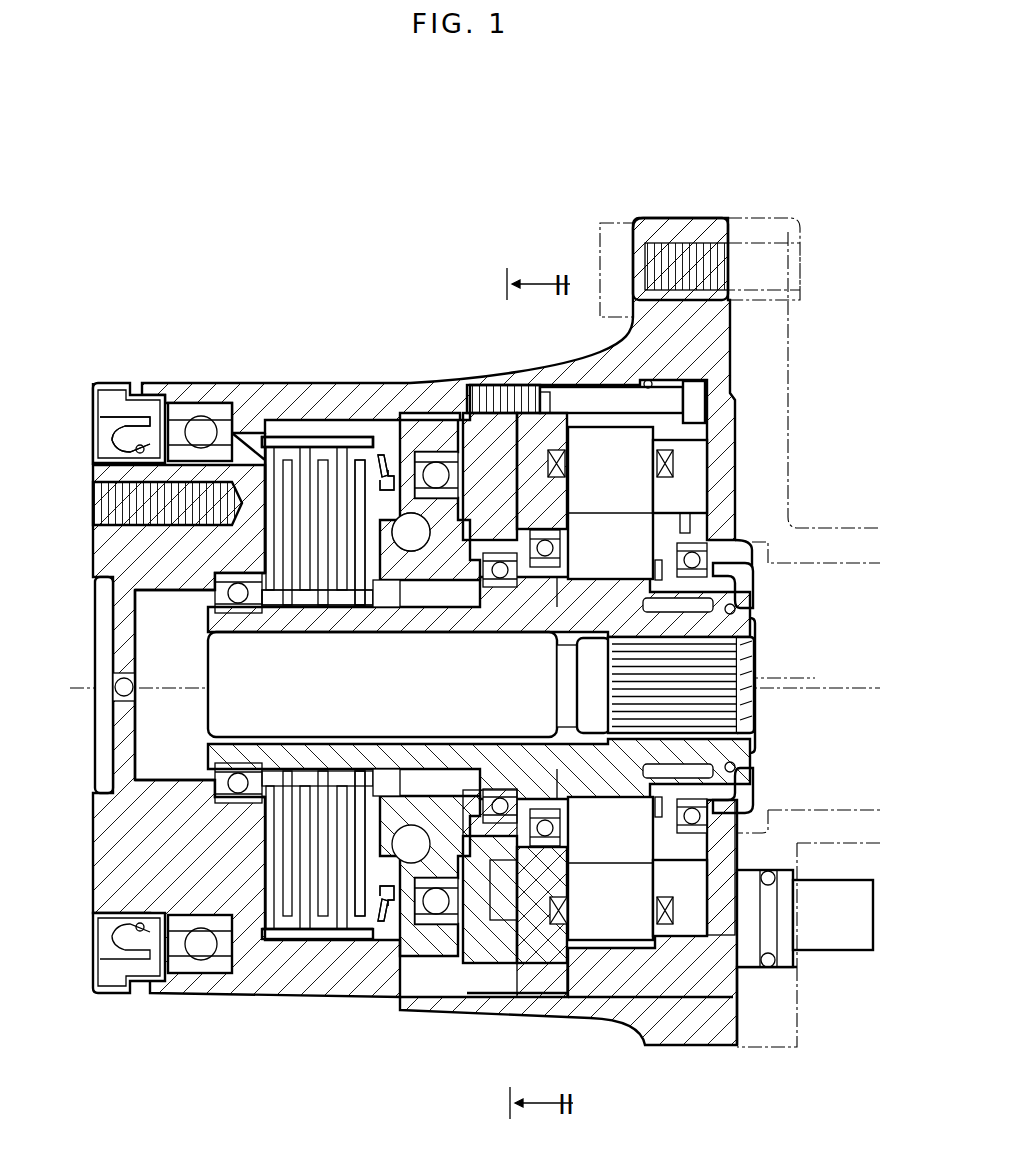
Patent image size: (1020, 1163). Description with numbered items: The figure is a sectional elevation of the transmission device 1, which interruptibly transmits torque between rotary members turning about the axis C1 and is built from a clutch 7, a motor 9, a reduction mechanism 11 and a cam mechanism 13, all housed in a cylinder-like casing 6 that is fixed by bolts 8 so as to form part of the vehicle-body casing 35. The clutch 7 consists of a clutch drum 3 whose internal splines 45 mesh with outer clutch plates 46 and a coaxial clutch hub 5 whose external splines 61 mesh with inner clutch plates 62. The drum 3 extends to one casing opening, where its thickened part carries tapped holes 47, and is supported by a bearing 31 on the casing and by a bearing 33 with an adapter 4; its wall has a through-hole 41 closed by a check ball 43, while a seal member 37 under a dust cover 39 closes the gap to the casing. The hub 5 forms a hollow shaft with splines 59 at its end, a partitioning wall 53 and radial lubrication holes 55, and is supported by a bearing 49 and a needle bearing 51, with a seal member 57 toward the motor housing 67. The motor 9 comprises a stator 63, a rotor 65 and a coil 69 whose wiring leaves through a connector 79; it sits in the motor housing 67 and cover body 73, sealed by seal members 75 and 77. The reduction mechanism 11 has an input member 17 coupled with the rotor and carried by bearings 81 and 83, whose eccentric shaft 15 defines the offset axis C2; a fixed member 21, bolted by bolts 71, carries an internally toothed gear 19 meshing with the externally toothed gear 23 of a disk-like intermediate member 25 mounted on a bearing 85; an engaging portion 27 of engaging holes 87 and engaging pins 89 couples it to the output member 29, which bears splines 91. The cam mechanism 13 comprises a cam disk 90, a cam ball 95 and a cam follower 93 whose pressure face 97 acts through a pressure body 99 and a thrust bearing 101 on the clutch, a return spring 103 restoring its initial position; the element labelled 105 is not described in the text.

The transmission device 1 is at (458, 182).
The clutch drum 3 is at (270, 412).
The adapter 4 is at (395, 428).
The clutch hub 5 is at (762, 652).
The casing 6 is at (220, 382).
The clutch 7 is at (334, 432).
The bolts 8 is at (612, 222).
The motor 9 is at (601, 962).
The reduction mechanism 11 is at (500, 372).
The cam mechanism 13 is at (384, 452).
The eccentric shaft 15 is at (520, 530).
The input member 17 is at (600, 582).
The internally toothed gear 19 is at (492, 1000).
The fixed member 21 is at (476, 998).
The externally toothed gear 23 is at (462, 995).
The intermediate member 25 is at (522, 1000).
The engaging portion 27 is at (505, 925).
The output member 29 is at (433, 788).
The bearing 31 is at (200, 950).
The bearing 33 is at (440, 462).
The casing 35 is at (690, 212).
The seal member 37 is at (140, 417).
The dust cover 39 is at (105, 383).
The through-hole 41 is at (116, 690).
The check ball 43 is at (104, 680).
The splines 45 is at (295, 435).
The outer clutch plates 46 is at (360, 458).
The tapped holes 47 is at (100, 499).
The bearing 49 is at (232, 606).
The needle bearing 51 is at (756, 780).
The partitioning wall 53 is at (565, 698).
The lubrication holes 55 is at (388, 606).
The seal member 57 is at (756, 590).
The splines 59 is at (758, 714).
The splines 61 is at (287, 775).
The inner clutch plates 62 is at (290, 592).
The stator 63 is at (624, 942).
The rotor 65 is at (748, 1003).
The motor housing 67 is at (683, 1000).
The coil 69 is at (710, 985).
The bolts 71 is at (585, 400).
The cover body 73 is at (550, 955).
The seal member 75 is at (648, 379).
The seal member 77 is at (548, 392).
The connector 79 is at (758, 952).
The bearing 81 is at (545, 568).
The bearing 83 is at (735, 545).
The bearing 85 is at (499, 788).
The engaging holes 87 is at (470, 540).
The engaging pins 89 is at (495, 588).
The cam disk 90 is at (414, 512).
The splines 91 is at (388, 795).
The cam follower 93 is at (385, 476).
The cam ball 95 is at (366, 604).
The pressure face 97 is at (380, 800).
The pressure body 99 is at (332, 845).
The thrust bearing 101 is at (375, 945).
The return spring 103 is at (330, 942).
The snap ring 105 is at (390, 930).
The axis C1 is at (835, 690).
The axis C2 is at (701, 663).